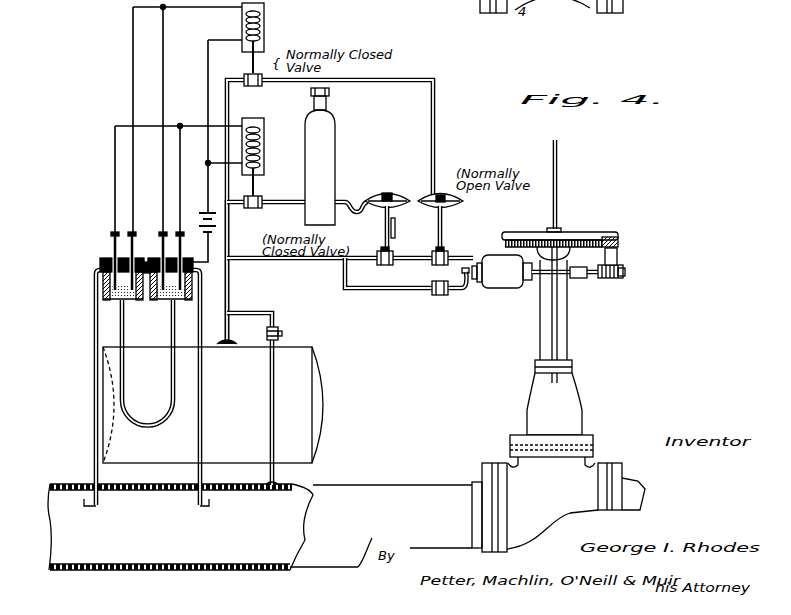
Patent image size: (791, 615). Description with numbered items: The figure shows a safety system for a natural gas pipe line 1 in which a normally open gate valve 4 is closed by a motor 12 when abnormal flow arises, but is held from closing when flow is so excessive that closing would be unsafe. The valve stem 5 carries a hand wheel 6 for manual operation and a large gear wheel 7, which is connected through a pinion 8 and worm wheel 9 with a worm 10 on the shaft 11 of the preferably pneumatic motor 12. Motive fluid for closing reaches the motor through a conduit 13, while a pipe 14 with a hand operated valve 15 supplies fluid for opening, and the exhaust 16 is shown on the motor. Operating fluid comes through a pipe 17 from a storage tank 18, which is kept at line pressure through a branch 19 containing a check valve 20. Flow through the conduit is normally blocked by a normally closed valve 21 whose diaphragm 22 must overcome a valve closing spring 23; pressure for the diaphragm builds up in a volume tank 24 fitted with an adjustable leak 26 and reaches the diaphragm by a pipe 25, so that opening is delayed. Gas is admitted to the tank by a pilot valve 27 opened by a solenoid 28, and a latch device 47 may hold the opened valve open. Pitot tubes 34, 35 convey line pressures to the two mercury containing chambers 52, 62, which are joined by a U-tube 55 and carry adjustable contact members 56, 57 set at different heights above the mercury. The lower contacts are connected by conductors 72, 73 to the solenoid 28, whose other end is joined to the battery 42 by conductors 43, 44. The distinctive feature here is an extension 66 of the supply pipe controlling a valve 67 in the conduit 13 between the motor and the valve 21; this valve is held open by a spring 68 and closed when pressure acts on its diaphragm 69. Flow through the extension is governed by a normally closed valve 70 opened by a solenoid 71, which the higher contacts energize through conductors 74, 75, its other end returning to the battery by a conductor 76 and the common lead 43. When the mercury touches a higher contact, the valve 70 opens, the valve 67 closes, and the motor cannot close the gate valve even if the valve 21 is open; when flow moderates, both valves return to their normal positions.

The pipe line 1 is at (222, 568).
The gate valve 4 is at (594, 440).
The valve stem 5 is at (562, 165).
The hand wheel 6 is at (604, 238).
The gear wheel 7 is at (575, 242).
The pinion 8 is at (618, 241).
The worm wheel 9 is at (613, 278).
The worm 10 is at (622, 268).
The motor shaft 11 is at (568, 278).
The motor 12 is at (520, 284).
The conduit 13 is at (456, 257).
The pipe 14 is at (413, 287).
The hand operated valve 15 is at (437, 294).
The exhaust 16 is at (467, 274).
The pipe 17 is at (228, 292).
The storage tank 18 is at (318, 437).
The branch pipe 19 is at (276, 312).
The check valve 20 is at (282, 333).
The normally closed valve 21 is at (393, 254).
The diaphragm 22 is at (398, 195).
The valve closing spring 23 is at (383, 193).
The volume tank 24 is at (332, 122).
The pipe 25 is at (358, 193).
The adjustable leak 26 is at (329, 93).
The pilot valve 27 is at (252, 194).
The solenoid 28 is at (264, 133).
The Pitot tube 34 is at (93, 507).
The Pitot tube 35 is at (202, 508).
The battery 42 is at (206, 215).
The common lead 43 is at (197, 221).
The conductor 44 is at (208, 163).
The latch device 47 is at (395, 232).
The electrolytic cell 52 is at (100, 280).
The tube 55 is at (120, 332).
The electrode 56 is at (110, 248).
The electrode 57 is at (131, 243).
The electrolytic cell 62 is at (174, 301).
The pipe extension 66 is at (228, 107).
The valve 67 is at (446, 250).
The spring 68 is at (463, 205).
The diaphragm 69 is at (396, 206).
The normally closed valve 70 is at (250, 74).
The solenoid 71 is at (265, 25).
The conductor 72 is at (180, 176).
The conductor 73 is at (115, 190).
The conductor 74 is at (163, 35).
The conductor 75 is at (133, 43).
The conductor 76 is at (207, 89).